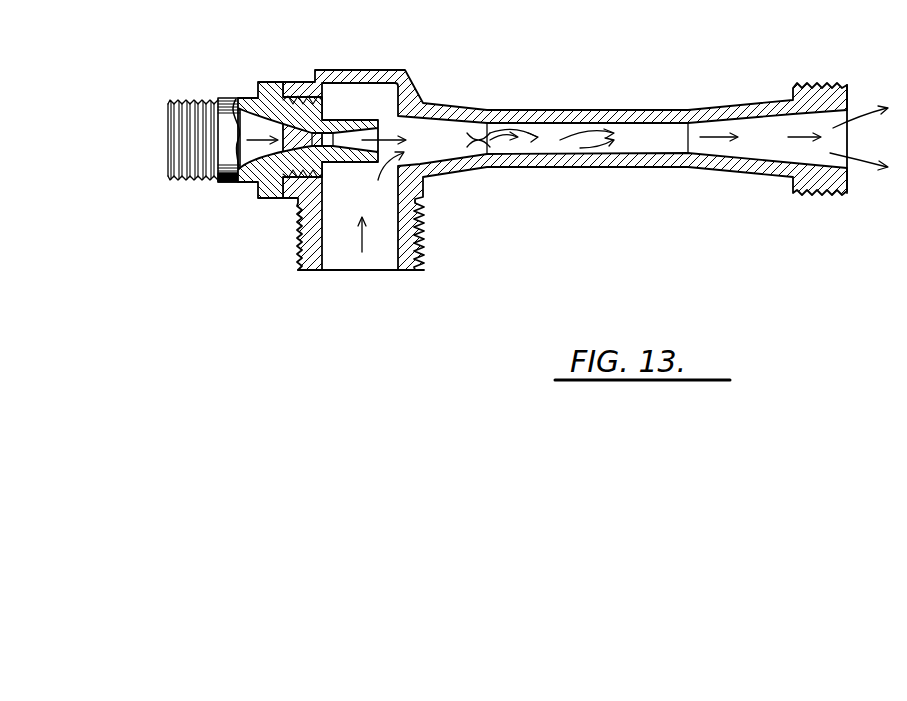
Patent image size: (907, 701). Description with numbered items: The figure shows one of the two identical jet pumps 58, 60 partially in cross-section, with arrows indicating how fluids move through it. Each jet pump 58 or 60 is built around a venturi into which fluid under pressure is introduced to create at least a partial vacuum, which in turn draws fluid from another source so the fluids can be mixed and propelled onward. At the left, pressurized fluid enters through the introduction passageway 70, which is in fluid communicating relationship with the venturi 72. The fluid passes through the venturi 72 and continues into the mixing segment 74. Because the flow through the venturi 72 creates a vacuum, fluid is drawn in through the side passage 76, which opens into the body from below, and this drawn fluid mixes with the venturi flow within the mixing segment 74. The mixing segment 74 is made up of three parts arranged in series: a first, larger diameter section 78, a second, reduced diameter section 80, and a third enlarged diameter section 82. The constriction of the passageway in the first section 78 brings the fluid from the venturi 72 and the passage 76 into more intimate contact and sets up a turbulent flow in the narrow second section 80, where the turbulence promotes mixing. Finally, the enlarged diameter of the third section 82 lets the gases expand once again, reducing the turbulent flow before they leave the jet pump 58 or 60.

The jet pump 58 is at (565, 135).
The jet pump 60 is at (628, 58).
The introduction passageway 70 is at (178, 123).
The venturi 72 is at (252, 163).
The mixing segment 74 is at (528, 108).
The passage 76 is at (362, 272).
The first, larger diameter section 78 is at (430, 146).
The second, reduced diameter section 80 is at (665, 137).
The third enlarged diameter section 82 is at (763, 137).